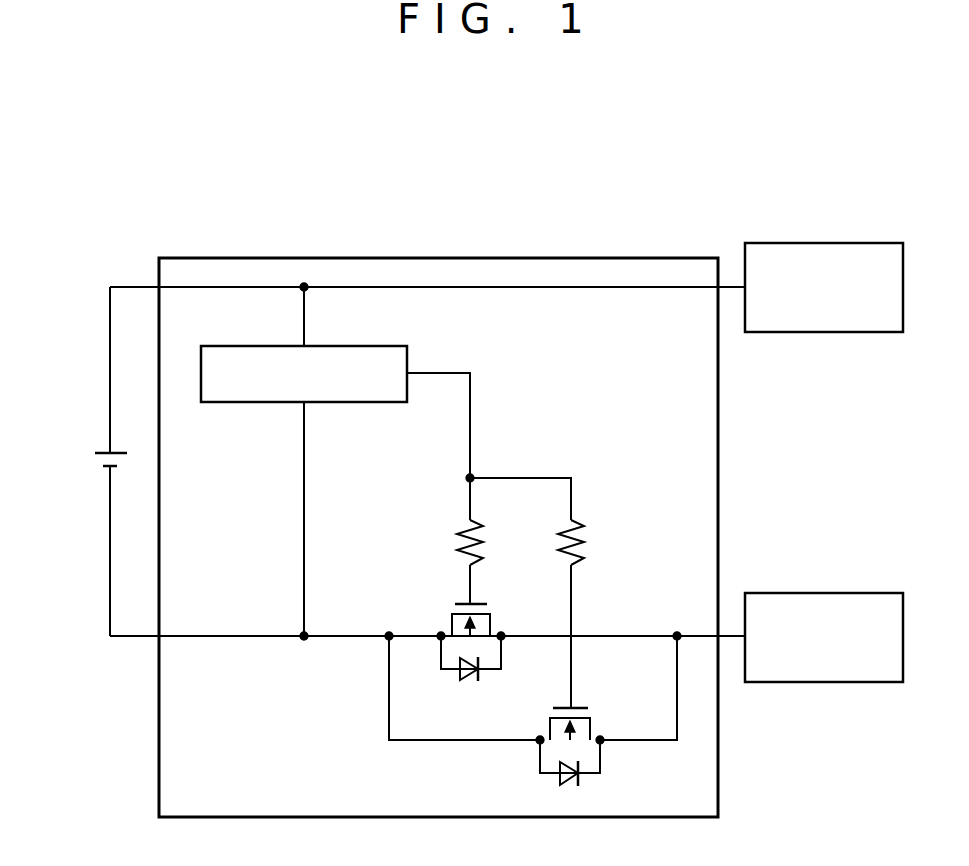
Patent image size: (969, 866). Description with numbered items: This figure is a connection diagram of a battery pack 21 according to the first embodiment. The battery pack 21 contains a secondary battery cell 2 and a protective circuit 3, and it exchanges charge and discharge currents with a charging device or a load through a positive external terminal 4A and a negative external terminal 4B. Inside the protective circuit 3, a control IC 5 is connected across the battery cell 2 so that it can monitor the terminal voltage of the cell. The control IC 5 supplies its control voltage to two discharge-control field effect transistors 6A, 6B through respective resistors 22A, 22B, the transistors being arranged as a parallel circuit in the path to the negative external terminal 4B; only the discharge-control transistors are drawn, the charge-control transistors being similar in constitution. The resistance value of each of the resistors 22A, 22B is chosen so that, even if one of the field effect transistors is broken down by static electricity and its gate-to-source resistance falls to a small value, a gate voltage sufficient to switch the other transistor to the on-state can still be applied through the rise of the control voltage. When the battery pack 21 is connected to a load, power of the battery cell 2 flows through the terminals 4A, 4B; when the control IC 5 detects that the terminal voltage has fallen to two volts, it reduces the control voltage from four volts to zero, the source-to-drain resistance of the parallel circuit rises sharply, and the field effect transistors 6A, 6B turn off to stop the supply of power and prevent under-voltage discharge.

The battery pack 21 is at (644, 232).
The secondary battery cell 2 is at (96, 453).
The protective circuit 3 is at (718, 458).
The positive external terminal 4A is at (820, 243).
The negative external terminal 4B is at (822, 593).
The control IC 5 is at (393, 346).
The resistor 22A is at (458, 562).
The resistor 22B is at (583, 560).
The field effect transistor 6A is at (452, 632).
The field effect transistor 6B is at (590, 728).